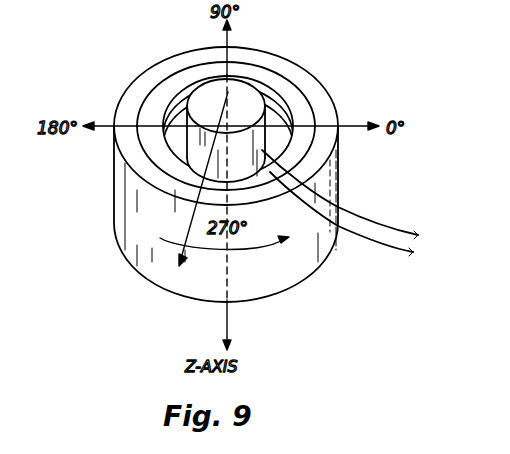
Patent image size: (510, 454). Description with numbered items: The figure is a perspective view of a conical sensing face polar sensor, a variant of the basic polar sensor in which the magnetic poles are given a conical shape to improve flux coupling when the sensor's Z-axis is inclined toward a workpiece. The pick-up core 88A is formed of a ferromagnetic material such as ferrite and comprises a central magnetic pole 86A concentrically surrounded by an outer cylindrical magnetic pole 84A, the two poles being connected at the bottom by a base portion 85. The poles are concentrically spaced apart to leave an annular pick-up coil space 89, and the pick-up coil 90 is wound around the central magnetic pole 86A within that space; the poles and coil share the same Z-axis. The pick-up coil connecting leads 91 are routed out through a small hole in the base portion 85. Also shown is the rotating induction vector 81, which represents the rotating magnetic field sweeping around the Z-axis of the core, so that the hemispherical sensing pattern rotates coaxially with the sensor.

The rotating induction vector 81 is at (192, 212).
The outer cylindrical magnetic pole 84A is at (288, 58).
The base portion 85 is at (156, 286).
The central magnetic pole 86A is at (262, 89).
The pick-up core 88A is at (339, 176).
The annular pick-up coil space 89 is at (153, 143).
The pick-up coil 90 is at (287, 115).
The pick-up coil connecting leads 91 is at (390, 231).